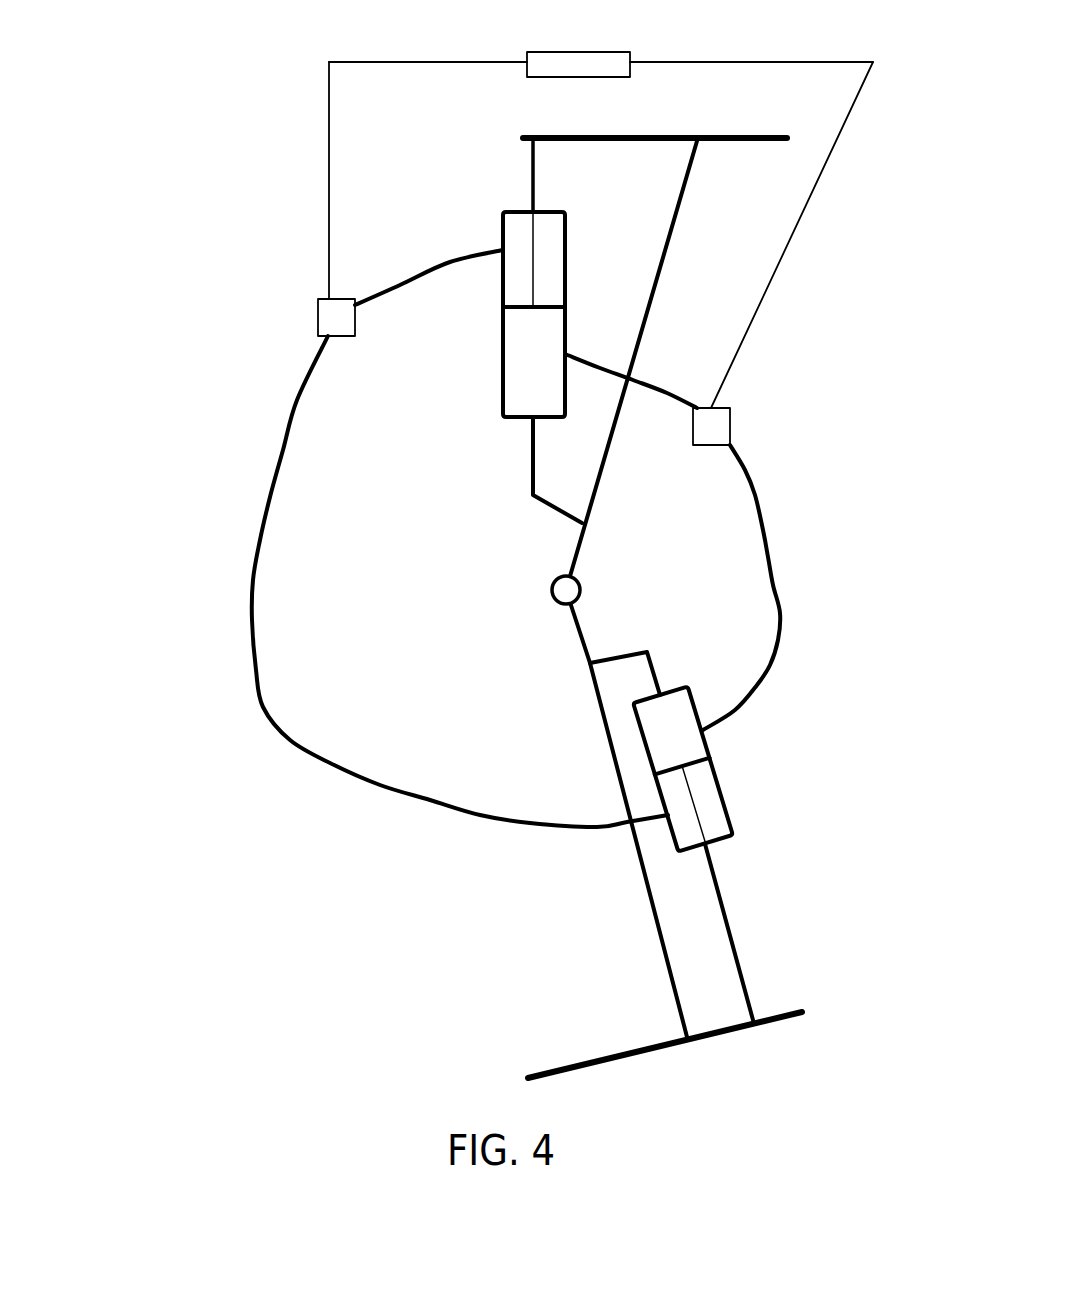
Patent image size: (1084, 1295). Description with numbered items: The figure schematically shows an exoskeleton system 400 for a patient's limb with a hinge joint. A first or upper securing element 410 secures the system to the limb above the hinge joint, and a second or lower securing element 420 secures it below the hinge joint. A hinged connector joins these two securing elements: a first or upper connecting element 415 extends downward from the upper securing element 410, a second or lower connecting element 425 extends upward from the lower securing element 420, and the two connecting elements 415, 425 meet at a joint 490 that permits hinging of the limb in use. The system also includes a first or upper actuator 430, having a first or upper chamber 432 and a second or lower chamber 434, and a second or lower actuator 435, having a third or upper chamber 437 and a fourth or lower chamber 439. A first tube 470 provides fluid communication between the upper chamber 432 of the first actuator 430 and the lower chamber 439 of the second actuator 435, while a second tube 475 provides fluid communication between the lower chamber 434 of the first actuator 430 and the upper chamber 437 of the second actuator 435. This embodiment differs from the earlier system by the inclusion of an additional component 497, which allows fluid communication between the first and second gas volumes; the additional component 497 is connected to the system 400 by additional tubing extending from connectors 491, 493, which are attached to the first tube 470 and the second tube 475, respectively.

The exoskeleton system 400 is at (273, 101).
The first or upper securing element 410 is at (614, 137).
The first or upper connecting element 415 is at (668, 268).
The second or lower securing element 420 is at (620, 1050).
The second or lower connecting element 425 is at (650, 902).
The first or upper actuator 430 is at (497, 332).
The first or upper chamber 432 is at (517, 248).
The second or lower chamber 434 is at (534, 362).
The second or lower actuator 435 is at (717, 769).
The third or upper chamber 437 is at (671, 731).
The fourth or lower chamber 439 is at (708, 808).
The first tube 470 is at (265, 500).
The second tube 475 is at (770, 556).
The joint 490 is at (551, 590).
The connector 491 is at (317, 322).
The connector 493 is at (732, 425).
The additional component 497 is at (547, 55).